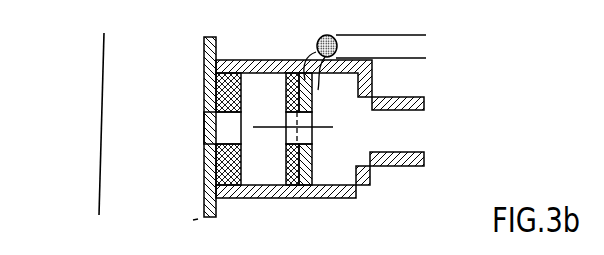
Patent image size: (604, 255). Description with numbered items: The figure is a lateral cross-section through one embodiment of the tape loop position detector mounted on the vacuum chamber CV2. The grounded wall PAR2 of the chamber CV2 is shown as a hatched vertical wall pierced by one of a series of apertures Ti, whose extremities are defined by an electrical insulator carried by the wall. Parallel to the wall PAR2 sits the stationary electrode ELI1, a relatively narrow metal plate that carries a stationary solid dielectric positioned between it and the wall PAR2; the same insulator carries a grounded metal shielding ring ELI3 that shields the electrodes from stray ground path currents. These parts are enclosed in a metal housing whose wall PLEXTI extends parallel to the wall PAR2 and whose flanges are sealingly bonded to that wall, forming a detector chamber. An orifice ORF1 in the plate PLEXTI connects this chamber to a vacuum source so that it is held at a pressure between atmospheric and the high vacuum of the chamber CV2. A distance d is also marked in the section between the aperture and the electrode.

The chamber CV2 is at (117, 190).
The wall PAR2 is at (205, 68).
The wall PLEXTI is at (374, 78).
The orifice ORF1 is at (384, 168).
The aperture Ti is at (203, 124).
The electrode ELI1 is at (286, 99).
The shielding ring ELI3 is at (310, 152).
The distance d is at (293, 126).